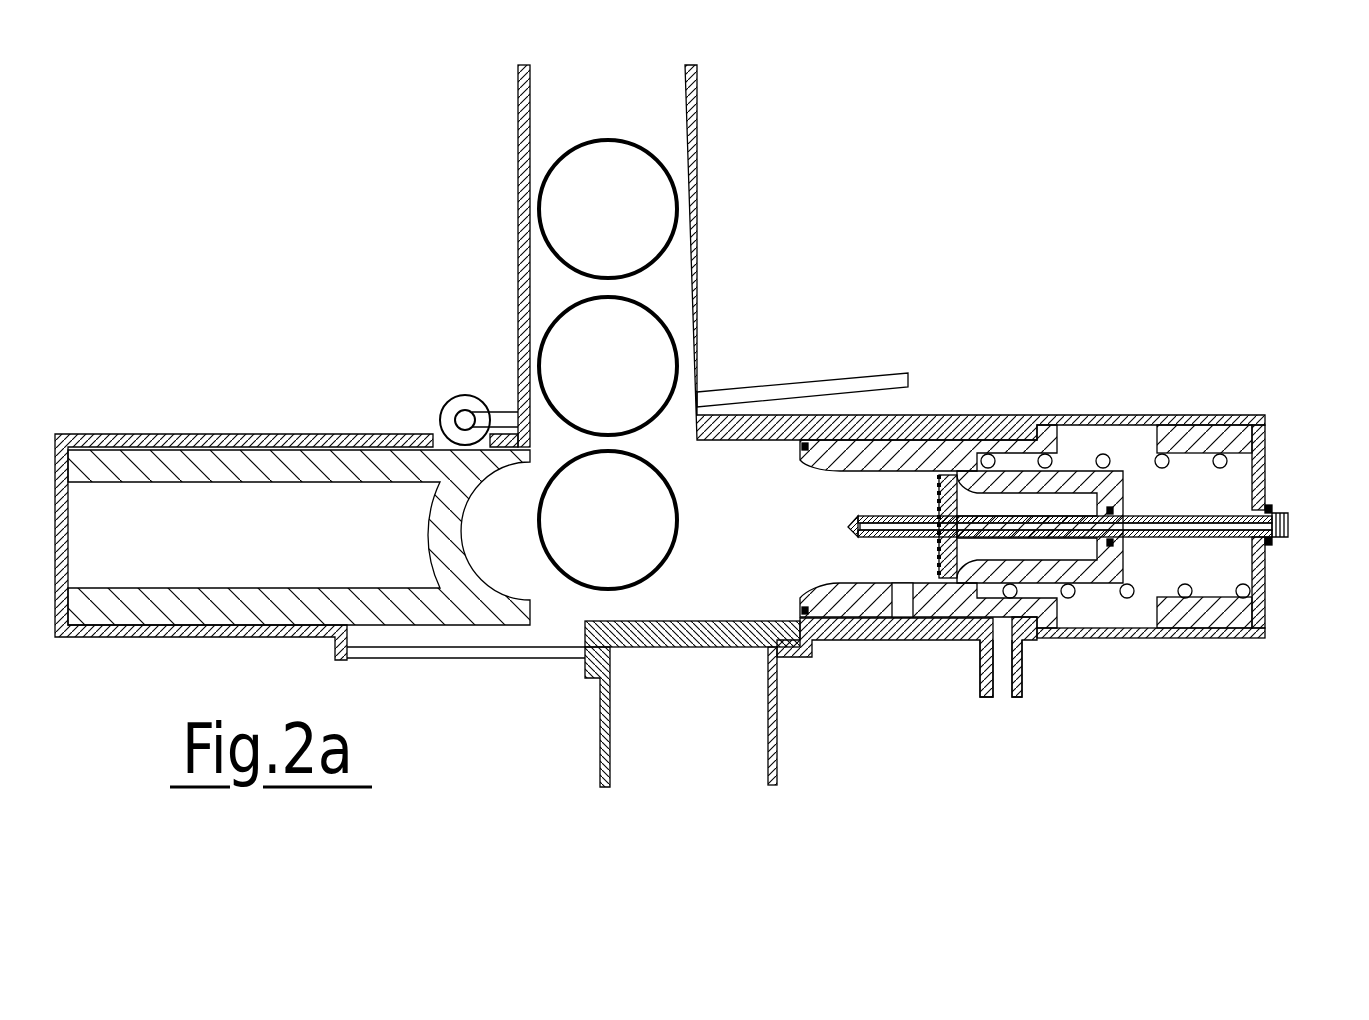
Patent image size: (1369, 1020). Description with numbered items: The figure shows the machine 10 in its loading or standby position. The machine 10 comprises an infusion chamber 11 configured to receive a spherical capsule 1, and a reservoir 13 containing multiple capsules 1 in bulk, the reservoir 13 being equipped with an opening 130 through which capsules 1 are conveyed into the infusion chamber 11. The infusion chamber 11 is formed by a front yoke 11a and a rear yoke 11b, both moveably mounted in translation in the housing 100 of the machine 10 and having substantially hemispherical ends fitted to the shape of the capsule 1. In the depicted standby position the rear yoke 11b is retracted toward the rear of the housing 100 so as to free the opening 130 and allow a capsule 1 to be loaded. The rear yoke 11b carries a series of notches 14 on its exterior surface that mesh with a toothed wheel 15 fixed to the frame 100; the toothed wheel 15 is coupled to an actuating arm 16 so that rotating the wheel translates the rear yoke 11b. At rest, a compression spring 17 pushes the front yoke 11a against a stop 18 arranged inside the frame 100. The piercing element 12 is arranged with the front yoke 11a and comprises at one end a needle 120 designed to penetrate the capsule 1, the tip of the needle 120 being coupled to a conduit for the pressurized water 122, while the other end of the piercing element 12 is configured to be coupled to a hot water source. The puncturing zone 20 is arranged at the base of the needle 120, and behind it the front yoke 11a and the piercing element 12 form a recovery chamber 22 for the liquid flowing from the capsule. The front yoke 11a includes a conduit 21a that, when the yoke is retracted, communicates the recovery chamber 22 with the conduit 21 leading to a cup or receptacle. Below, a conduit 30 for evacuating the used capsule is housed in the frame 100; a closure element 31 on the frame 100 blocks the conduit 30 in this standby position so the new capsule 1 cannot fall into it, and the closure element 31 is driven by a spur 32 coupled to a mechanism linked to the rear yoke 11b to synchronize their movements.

The spherical capsule 1 is at (614, 530).
The machine 10 is at (945, 160).
The infusion chamber 11 is at (732, 550).
The front yoke 11a is at (937, 452).
The rear yoke 11b is at (258, 467).
The piercing element 12 is at (1163, 514).
The reservoir 13 is at (695, 110).
The series of notches 14 is at (372, 452).
The toothed wheel 15 is at (452, 397).
The actuating arm 16 is at (848, 378).
The compression spring 17 is at (1102, 455).
The stop 18 is at (1037, 432).
The puncturing zone 20 is at (930, 542).
The conduit 21 is at (1020, 693).
The conduit 21a is at (902, 607).
The recovery chamber 22 is at (1043, 548).
The conduit for evacuating the used capsule 30 is at (772, 760).
The closure element 31 is at (773, 632).
The spur 32 is at (585, 677).
The housing 100 is at (1265, 478).
The needle 120 is at (877, 522).
The conduit for the pressurized water 122 is at (1183, 523).
The opening 130 is at (668, 430).